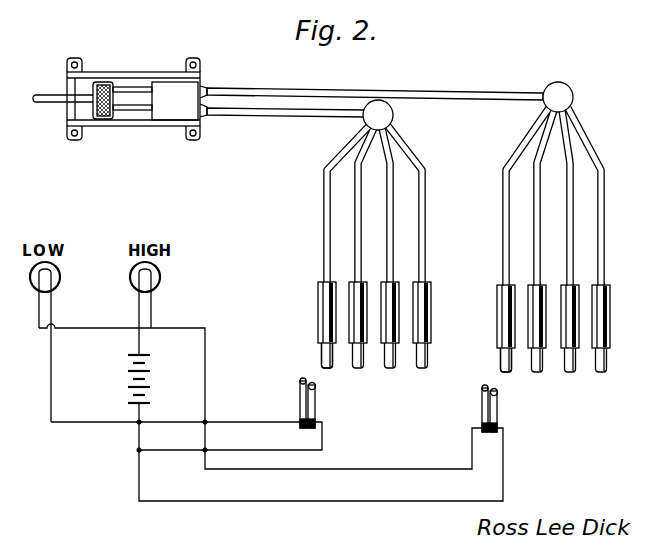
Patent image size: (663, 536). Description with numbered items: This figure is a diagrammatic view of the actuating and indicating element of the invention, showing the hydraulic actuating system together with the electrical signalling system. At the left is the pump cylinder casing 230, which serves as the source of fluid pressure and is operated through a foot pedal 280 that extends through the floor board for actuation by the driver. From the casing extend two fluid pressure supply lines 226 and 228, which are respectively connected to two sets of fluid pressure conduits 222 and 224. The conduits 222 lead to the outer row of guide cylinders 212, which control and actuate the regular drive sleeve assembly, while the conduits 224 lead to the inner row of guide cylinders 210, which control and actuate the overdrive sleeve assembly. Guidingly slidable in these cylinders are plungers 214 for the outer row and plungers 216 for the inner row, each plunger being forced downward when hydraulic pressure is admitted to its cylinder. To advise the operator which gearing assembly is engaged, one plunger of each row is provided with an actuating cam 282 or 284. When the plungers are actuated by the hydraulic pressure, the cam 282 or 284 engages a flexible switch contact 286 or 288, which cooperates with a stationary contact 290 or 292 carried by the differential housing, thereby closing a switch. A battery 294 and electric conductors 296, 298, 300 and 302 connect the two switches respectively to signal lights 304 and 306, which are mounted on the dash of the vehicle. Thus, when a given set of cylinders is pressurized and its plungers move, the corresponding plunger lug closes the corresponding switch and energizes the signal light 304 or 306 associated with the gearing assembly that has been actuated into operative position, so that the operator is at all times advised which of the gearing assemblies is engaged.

The inner row guide cylinders 210 is at (431, 319).
The outer row guide cylinders 212 is at (611, 305).
The plunger 214 is at (610, 360).
The plunger 216 is at (428, 358).
The fluid pressure conduits 222 is at (605, 232).
The fluid pressure conduits 224 is at (426, 222).
The fluid pressure supply line 226 is at (316, 92).
The fluid pressure supply line 228 is at (255, 116).
The pump cylinder casing 230 is at (139, 74).
The foot pedal 280 is at (50, 89).
The actuating cam 282 is at (498, 362).
The actuating cam 284 is at (320, 357).
The flexible switch contact 286 is at (498, 410).
The flexible switch contact 288 is at (316, 400).
The stationary contact 290 is at (482, 395).
The stationary contact 292 is at (300, 399).
The battery 294 is at (146, 373).
The electric conductor 296 is at (262, 503).
The electric conductor 298 is at (302, 470).
The electric conductor 300 is at (222, 449).
The electric conductor 302 is at (214, 425).
The signal light 304 is at (61, 275).
The signal light 306 is at (161, 275).